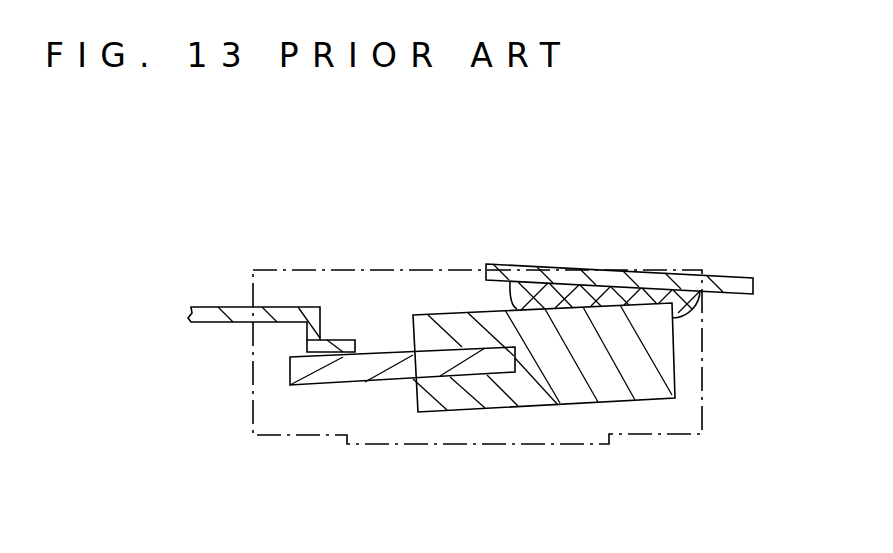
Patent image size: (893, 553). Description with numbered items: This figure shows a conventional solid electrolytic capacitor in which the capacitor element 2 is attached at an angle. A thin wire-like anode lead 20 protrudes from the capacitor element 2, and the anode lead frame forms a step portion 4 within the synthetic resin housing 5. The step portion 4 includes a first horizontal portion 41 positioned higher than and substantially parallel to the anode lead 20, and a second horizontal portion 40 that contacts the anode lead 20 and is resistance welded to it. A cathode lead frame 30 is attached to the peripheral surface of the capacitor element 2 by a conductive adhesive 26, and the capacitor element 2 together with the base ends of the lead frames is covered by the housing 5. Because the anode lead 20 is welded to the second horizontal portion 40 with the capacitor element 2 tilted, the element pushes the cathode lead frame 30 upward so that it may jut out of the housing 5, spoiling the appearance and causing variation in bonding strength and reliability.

The capacitor element 2 is at (545, 395).
The step portion 4 is at (363, 211).
The synthetic resin housing 5 is at (485, 432).
The anode lead 20 is at (397, 372).
The conductive adhesive 26 is at (690, 300).
The cathode lead frame 30 is at (648, 280).
The second horizontal portion 40 is at (343, 337).
The first horizontal portion 41 is at (233, 317).